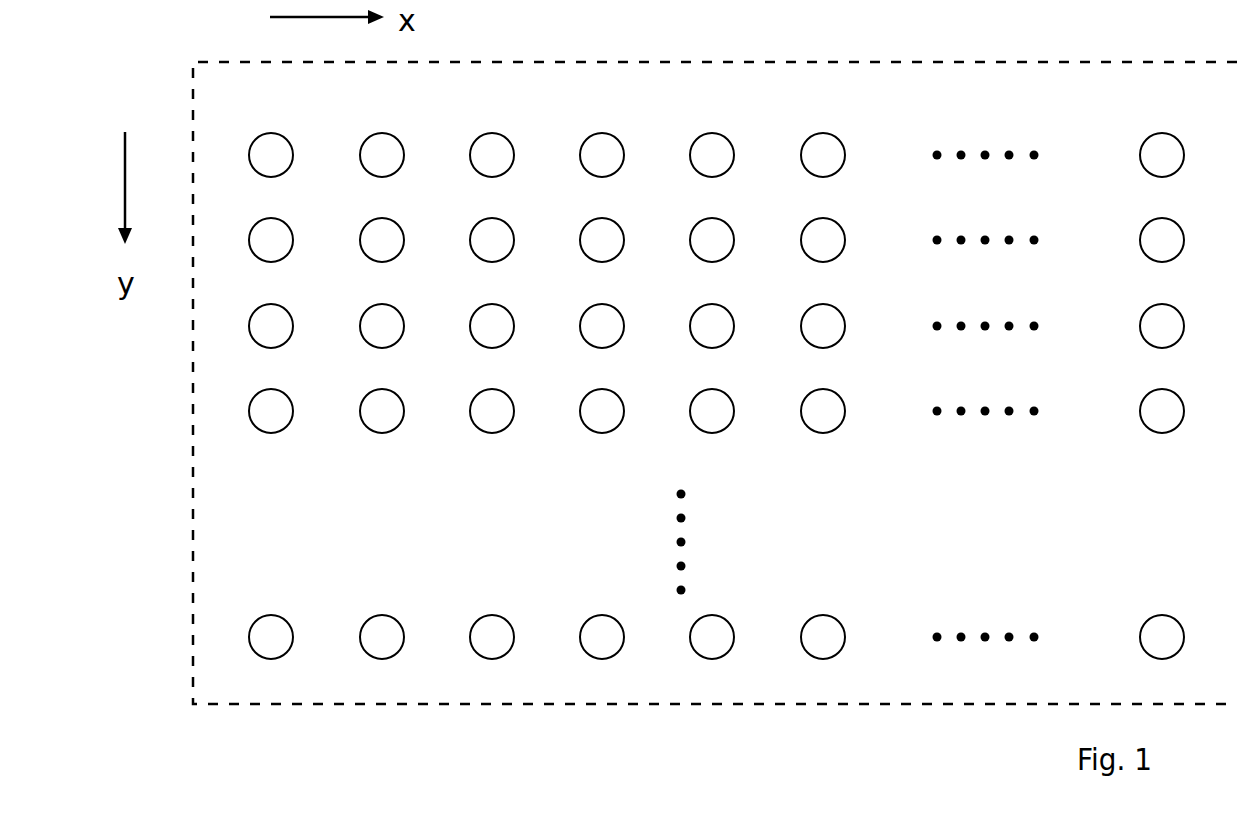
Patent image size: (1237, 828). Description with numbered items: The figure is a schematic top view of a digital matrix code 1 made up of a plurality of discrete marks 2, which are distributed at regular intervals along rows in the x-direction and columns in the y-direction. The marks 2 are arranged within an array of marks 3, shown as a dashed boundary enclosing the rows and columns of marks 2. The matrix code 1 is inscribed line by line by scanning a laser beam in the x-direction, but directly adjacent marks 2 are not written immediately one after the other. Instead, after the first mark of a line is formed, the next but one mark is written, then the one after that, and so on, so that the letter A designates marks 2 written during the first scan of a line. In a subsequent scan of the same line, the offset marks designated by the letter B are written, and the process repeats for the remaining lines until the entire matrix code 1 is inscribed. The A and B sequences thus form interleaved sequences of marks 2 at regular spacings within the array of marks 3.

The digital matrix code 1 is at (716, 341).
The mark 2 is at (384, 152).
The array of marks 3 is at (590, 62).